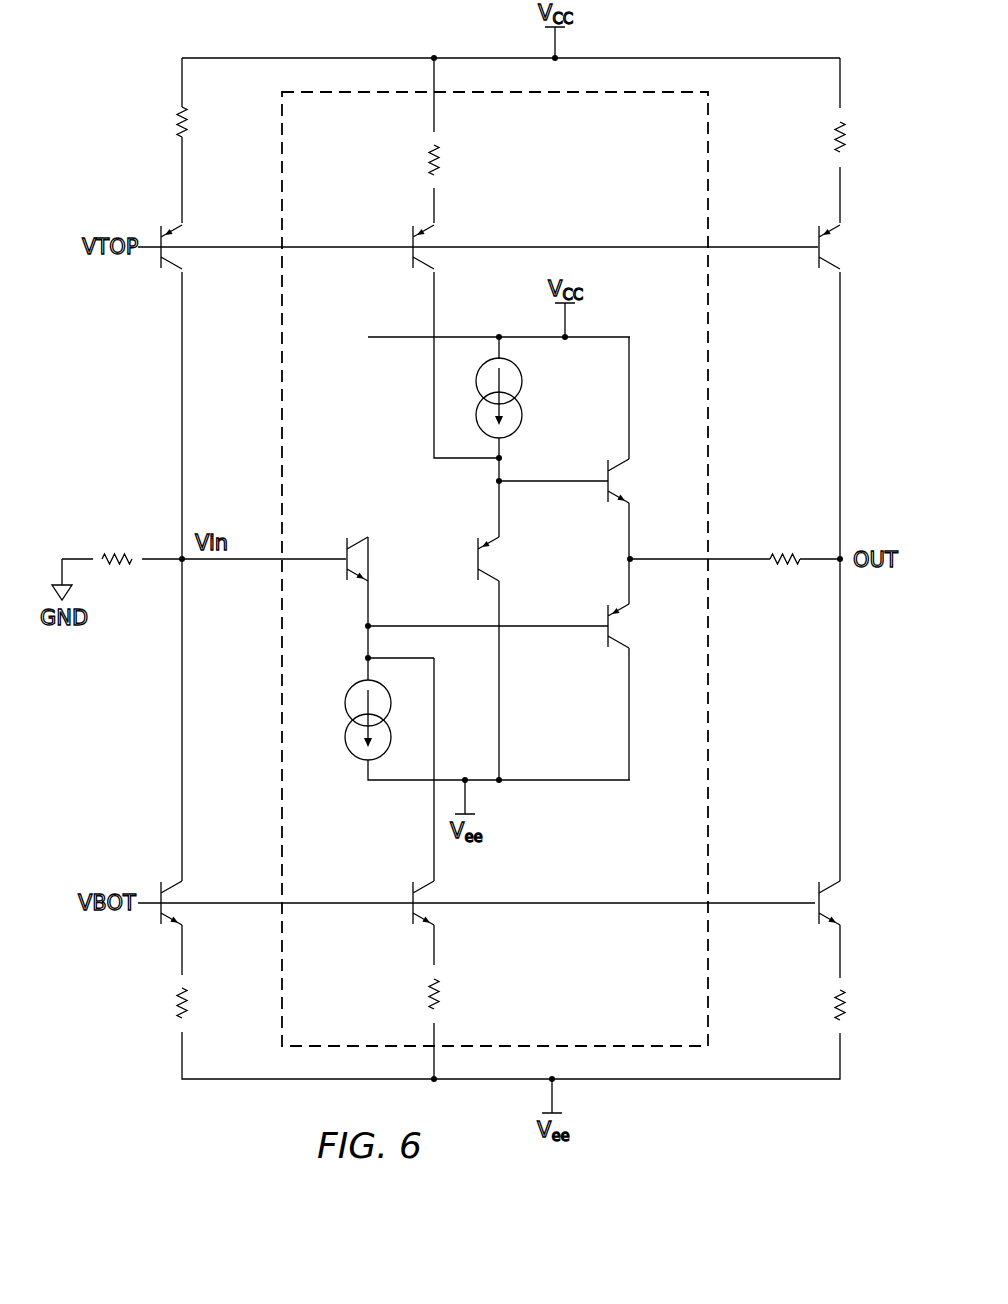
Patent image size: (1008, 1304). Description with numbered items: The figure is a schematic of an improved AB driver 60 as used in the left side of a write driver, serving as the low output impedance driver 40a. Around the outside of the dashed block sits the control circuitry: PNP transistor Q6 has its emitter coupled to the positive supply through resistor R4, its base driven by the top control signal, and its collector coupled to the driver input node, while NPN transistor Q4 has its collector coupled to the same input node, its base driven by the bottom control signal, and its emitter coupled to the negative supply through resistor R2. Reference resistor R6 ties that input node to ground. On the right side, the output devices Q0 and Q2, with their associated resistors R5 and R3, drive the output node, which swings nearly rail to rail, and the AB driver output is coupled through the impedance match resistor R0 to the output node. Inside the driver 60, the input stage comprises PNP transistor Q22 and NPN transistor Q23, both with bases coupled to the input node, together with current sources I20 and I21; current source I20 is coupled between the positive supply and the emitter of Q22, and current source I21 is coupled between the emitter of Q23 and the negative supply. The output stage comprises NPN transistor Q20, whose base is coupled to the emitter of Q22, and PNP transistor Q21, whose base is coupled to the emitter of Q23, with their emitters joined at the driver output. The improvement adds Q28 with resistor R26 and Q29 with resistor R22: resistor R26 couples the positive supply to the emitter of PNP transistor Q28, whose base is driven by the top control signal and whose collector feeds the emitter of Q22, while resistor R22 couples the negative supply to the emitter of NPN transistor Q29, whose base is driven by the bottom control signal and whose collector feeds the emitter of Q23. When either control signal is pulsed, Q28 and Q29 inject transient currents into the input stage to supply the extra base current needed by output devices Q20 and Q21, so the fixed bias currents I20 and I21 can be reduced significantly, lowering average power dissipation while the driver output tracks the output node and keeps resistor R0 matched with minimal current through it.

The improved AB driver 60 is at (559, 569).
The low output impedance driver 40a is at (708, 348).
The resistor R4 is at (200, 130).
The resistor R5 is at (857, 137).
The reference resistor R6 is at (117, 546).
The resistor R2 is at (199, 1003).
The resistor R3 is at (857, 1005).
The resistor R22 is at (457, 994).
The resistor R26 is at (458, 160).
The impedance match resistor R0 is at (794, 532).
The PNP transistor Q6 is at (163, 233).
The output device Q0 is at (847, 247).
The NPN transistor Q4 is at (164, 889).
The output device Q2 is at (843, 903).
The PNP transistor Q28 is at (411, 233).
The NPN transistor Q29 is at (410, 889).
The NPN transistor Q23 is at (345, 546).
The PNP transistor Q22 is at (509, 559).
The NPN transistor Q20 is at (640, 481).
The PNP transistor Q21 is at (640, 626).
The current source I20 is at (518, 398).
The current source I21 is at (353, 720).